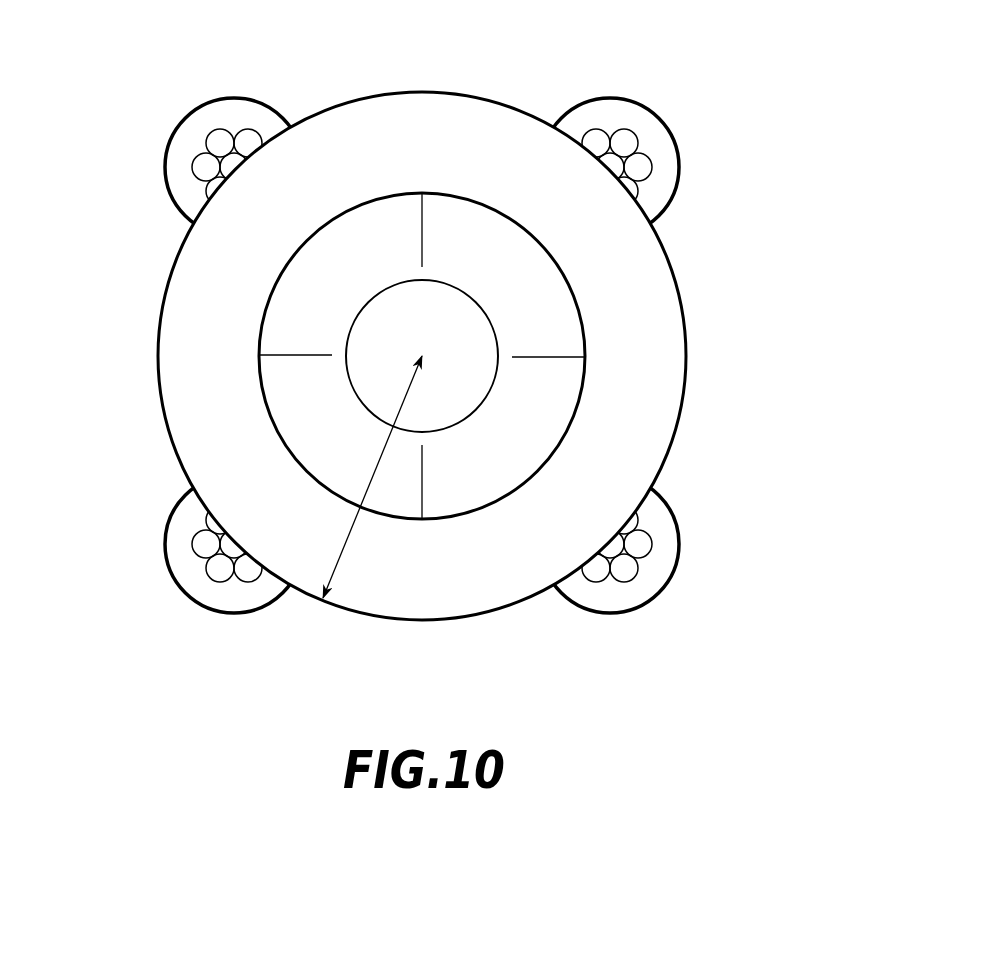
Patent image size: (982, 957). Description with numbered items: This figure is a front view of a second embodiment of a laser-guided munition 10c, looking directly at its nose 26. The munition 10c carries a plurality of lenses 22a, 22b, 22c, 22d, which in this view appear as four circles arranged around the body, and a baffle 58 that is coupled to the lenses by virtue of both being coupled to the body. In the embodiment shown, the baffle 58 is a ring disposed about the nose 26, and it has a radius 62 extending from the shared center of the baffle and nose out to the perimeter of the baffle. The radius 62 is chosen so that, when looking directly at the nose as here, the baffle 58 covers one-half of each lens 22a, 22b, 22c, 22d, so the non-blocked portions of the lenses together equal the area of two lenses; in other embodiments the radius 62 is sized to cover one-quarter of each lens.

The laser-guided munition 10c is at (432, 390).
The lens 22a is at (658, 118).
The lens 22b is at (165, 177).
The lens 22c is at (163, 557).
The lens 22d is at (680, 553).
The nose 26 is at (547, 327).
The baffle 58 is at (653, 344).
The radius 62 is at (343, 553).